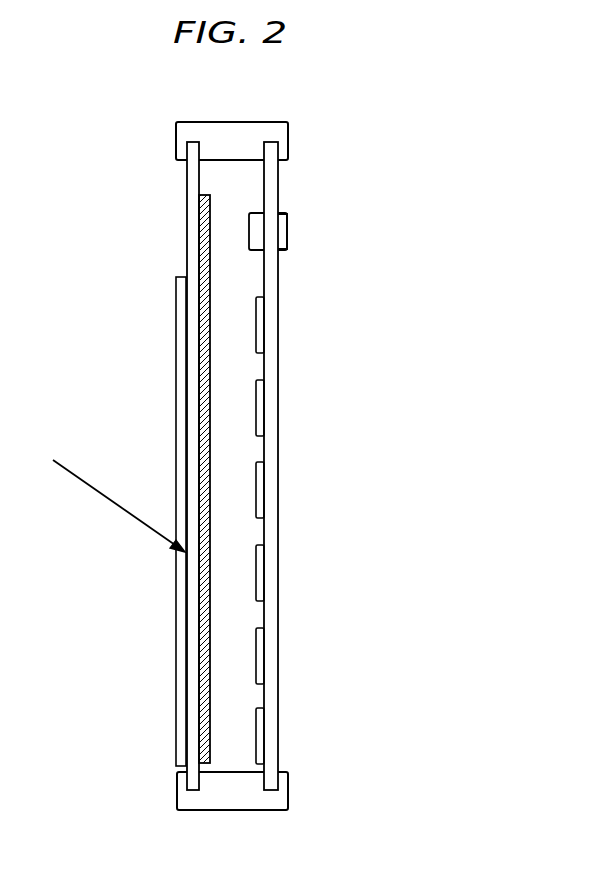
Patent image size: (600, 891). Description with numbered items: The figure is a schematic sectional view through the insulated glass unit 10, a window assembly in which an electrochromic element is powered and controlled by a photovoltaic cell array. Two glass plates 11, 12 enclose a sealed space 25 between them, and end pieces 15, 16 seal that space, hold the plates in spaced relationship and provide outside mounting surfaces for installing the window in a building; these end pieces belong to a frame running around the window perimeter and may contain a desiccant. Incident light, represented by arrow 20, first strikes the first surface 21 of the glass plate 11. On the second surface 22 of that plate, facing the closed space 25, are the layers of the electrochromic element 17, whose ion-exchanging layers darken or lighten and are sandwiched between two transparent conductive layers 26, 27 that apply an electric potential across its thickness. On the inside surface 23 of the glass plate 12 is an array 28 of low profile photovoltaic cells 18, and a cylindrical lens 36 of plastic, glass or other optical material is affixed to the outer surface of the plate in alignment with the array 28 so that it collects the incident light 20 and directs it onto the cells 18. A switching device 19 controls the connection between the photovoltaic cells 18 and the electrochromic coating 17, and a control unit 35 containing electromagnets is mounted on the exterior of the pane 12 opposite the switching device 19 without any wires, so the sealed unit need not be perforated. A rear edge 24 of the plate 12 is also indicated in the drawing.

The insulated glass unit 10 is at (239, 459).
The glass plate 11 is at (191, 355).
The glass plate 12 is at (270, 283).
The end piece 15 is at (208, 135).
The end piece 16 is at (222, 797).
The electrochromic element 17 is at (201, 304).
The photovoltaic cell 18 is at (301, 325).
The switching device 19 is at (258, 222).
The incident light 20 is at (85, 484).
The first surface 21 is at (186, 177).
The second surface 22 is at (201, 193).
The inside surface 23 is at (264, 173).
The rear edge 24 is at (278, 173).
The sealed space 25 is at (247, 370).
The transparent conductive layer 26 is at (201, 672).
The transparent conductive layer 27 is at (211, 632).
The array of photovoltaic cells 28 is at (337, 530).
The control unit 35 is at (282, 248).
The cylindrical lens 36 is at (180, 424).